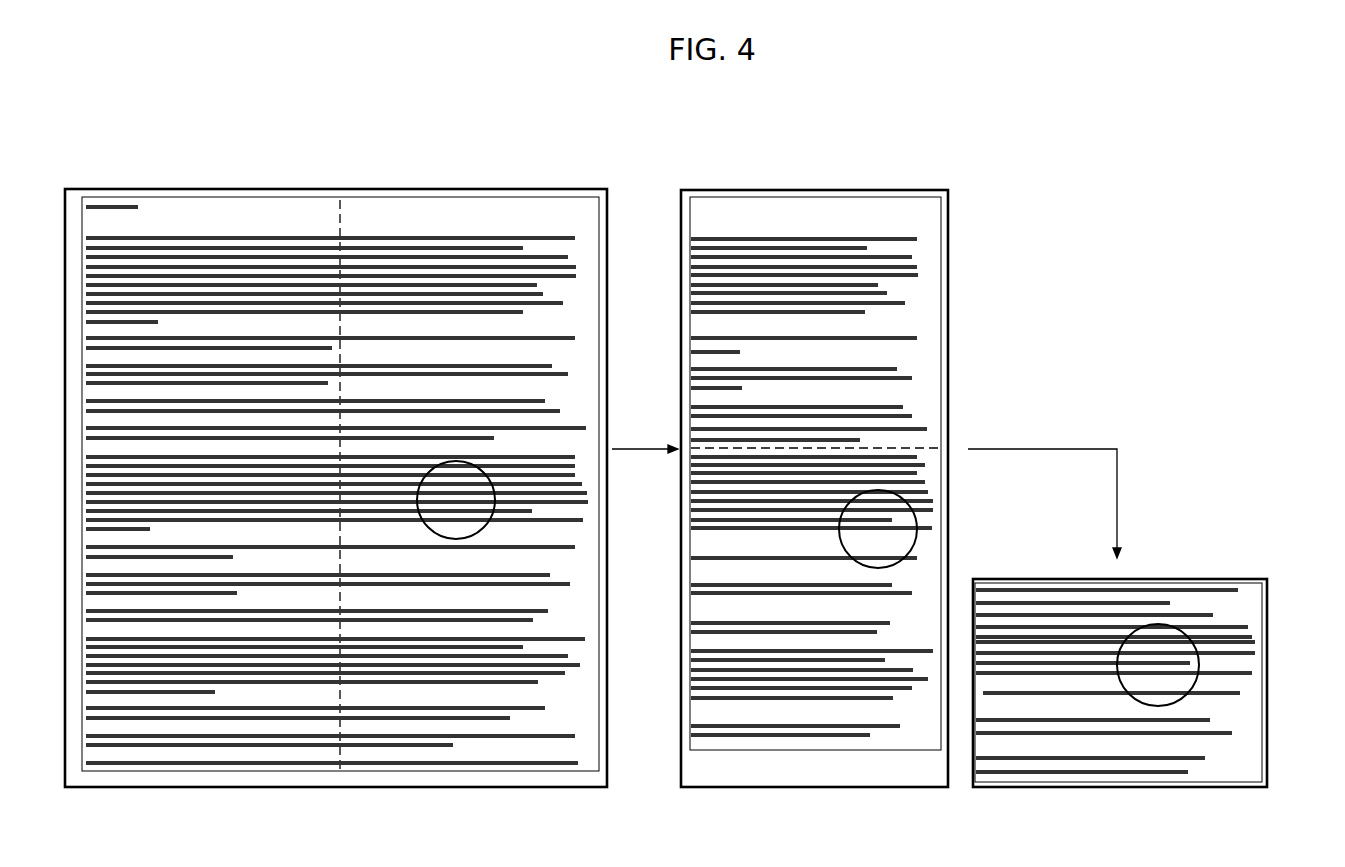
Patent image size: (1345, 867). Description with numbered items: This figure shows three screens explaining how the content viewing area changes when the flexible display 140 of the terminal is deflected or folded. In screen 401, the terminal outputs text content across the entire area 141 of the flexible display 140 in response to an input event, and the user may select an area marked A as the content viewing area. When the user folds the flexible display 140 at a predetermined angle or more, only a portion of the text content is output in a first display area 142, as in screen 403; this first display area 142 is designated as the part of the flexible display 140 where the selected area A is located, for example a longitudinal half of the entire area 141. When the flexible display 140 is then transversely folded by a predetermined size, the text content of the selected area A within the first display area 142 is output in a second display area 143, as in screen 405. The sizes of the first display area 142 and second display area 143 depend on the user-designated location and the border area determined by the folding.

The flexible display 140 is at (691, 185).
The entire area 141 is at (592, 313).
The first display area 142 is at (932, 313).
The second display area 143 is at (1255, 602).
The screen 401 is at (340, 189).
The screen 403 is at (817, 190).
The screen 405 is at (1160, 579).